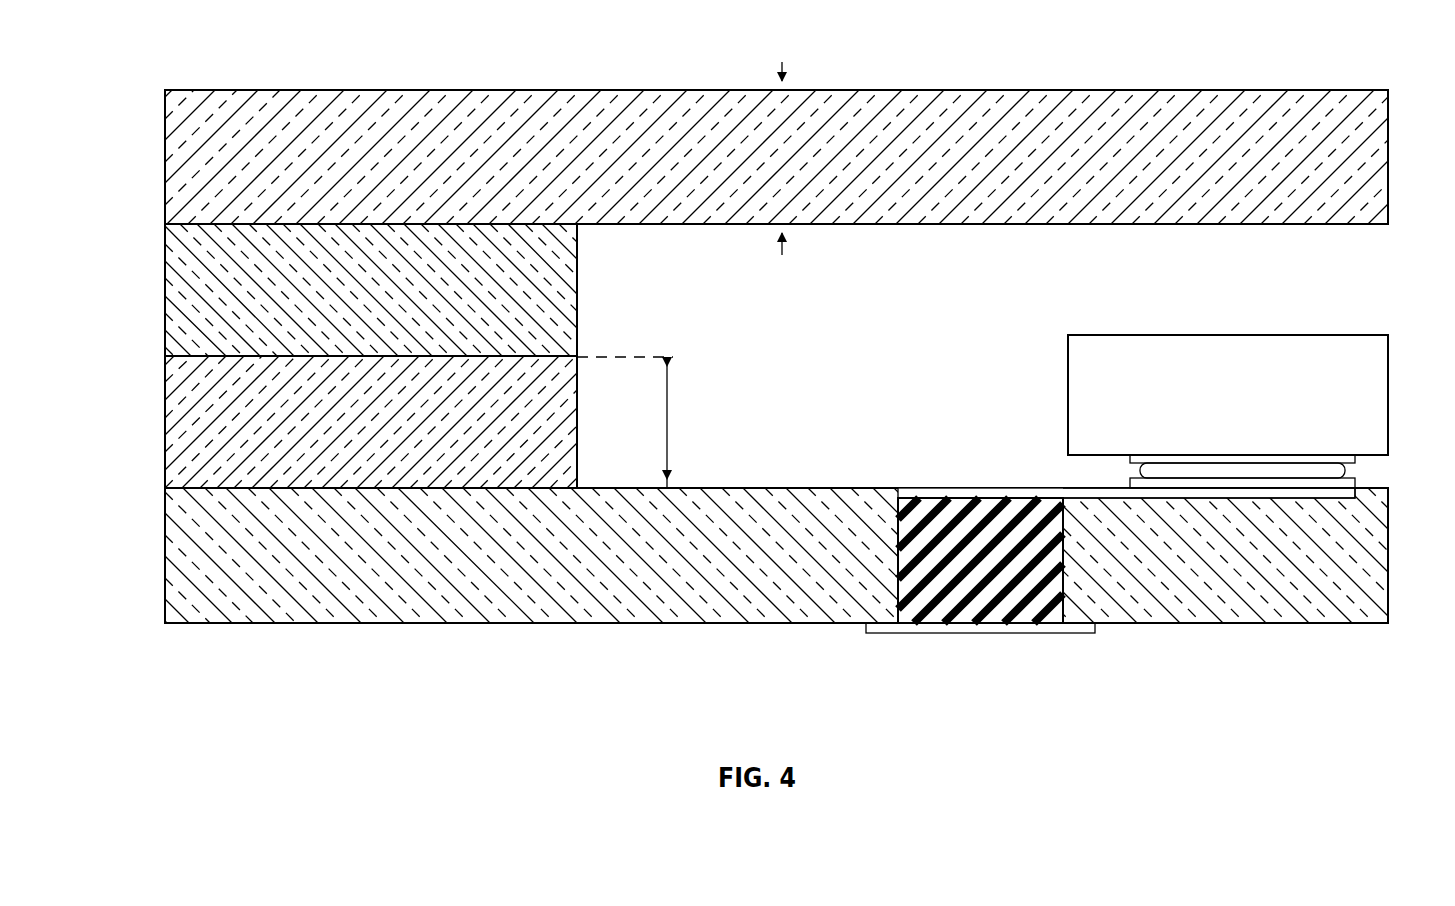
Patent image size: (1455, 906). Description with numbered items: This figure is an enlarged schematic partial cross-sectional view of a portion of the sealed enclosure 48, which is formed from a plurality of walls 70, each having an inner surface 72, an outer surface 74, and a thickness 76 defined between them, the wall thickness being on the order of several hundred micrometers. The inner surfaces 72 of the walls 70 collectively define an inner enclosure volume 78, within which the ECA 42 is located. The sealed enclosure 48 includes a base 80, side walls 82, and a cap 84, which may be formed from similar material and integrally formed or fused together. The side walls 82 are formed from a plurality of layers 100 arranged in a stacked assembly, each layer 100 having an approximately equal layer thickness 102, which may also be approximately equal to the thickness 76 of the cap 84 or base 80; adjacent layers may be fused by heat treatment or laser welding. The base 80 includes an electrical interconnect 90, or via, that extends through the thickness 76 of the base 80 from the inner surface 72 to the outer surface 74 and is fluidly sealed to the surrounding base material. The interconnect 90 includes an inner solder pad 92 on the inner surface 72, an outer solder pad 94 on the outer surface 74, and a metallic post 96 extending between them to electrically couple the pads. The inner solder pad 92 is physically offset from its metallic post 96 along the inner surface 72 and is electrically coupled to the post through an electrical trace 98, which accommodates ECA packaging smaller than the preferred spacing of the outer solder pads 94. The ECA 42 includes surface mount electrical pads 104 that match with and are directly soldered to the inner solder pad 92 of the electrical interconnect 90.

The ECA 42 is at (1375, 380).
The sealed enclosure 48 is at (1173, 100).
The walls 70 is at (922, 80).
The inner surface 72 is at (915, 226).
The outer surface 74 is at (165, 118).
The thickness 76 is at (782, 75).
The inner enclosure volume 78 is at (1025, 284).
The base 80 is at (1373, 555).
The side walls 82 is at (142, 235).
The cap 84 is at (1375, 140).
The electrical interconnect 90 is at (1068, 603).
The inner solder pad 92 is at (1357, 493).
The outer solder pad 94 is at (978, 635).
The metallic post 96 is at (895, 603).
The electrical trace 98 is at (987, 488).
The layers 100 is at (577, 293).
The layer thickness 102 is at (668, 418).
The surface mount electrical pads 104 is at (1357, 458).